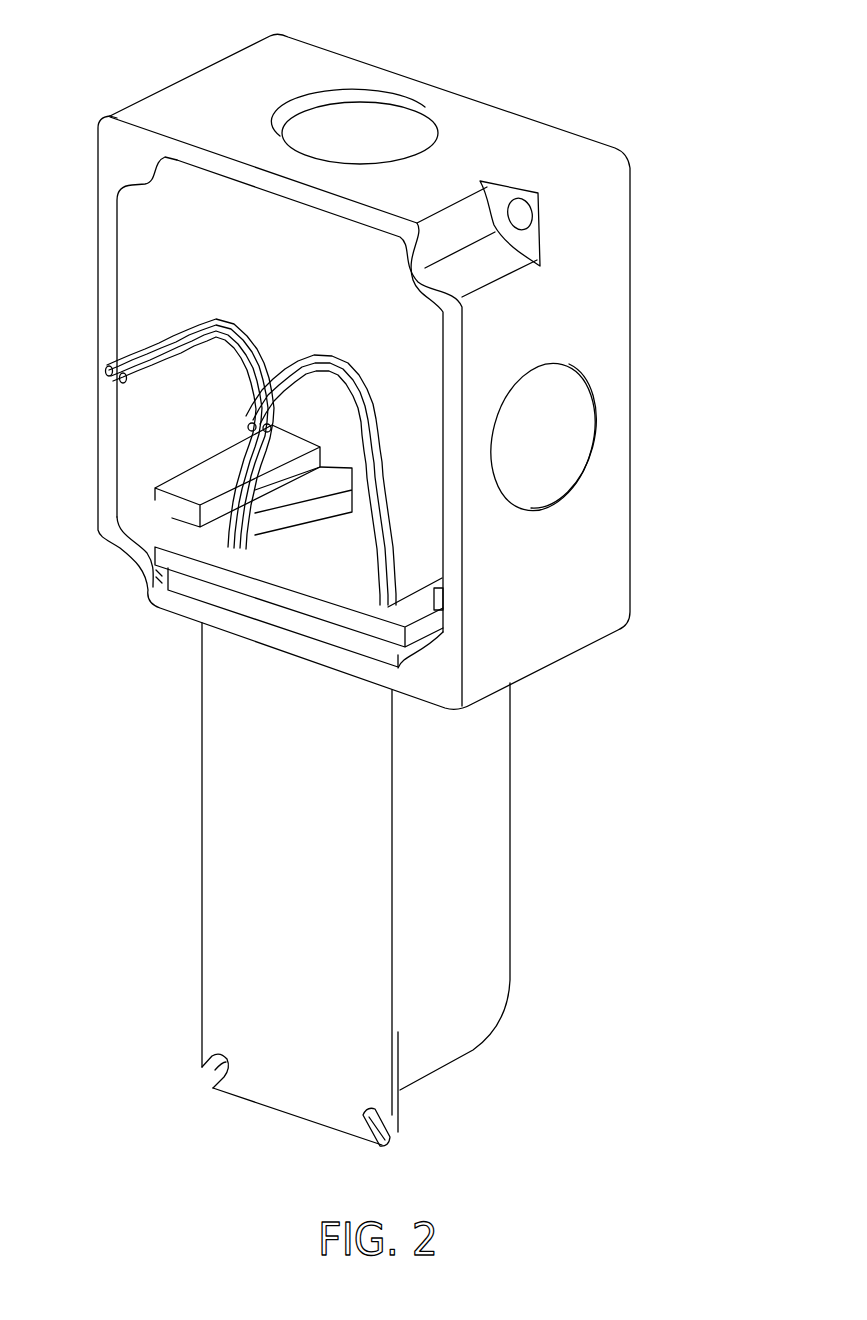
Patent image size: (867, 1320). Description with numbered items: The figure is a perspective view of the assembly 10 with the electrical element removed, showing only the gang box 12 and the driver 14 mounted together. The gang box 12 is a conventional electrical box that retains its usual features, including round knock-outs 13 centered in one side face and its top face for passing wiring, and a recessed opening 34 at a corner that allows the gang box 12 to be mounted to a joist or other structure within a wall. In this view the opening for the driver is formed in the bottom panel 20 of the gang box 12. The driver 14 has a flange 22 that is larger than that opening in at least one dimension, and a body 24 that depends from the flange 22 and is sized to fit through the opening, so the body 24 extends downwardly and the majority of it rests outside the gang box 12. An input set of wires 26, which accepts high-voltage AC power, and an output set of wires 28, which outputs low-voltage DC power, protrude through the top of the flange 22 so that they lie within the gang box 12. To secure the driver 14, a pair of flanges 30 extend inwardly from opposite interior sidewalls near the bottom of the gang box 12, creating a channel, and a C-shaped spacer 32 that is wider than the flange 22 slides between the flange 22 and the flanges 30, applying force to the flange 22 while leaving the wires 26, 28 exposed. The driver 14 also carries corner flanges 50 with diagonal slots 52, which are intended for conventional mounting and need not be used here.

The assembly 10 is at (570, 68).
The gang box 12 is at (496, 124).
The round knock-outs 13 is at (383, 122).
The driver 14 is at (496, 829).
The bottom panel 20 is at (158, 575).
The flange 22 is at (308, 632).
The body 24 is at (490, 880).
The input set of wires 26 is at (160, 350).
The output set of wires 28 is at (308, 358).
The pair of flanges 30 is at (190, 490).
The spacer 32 is at (222, 578).
The recessed openings 34 is at (521, 212).
The corner flanges 50 is at (205, 1053).
The diagonal slots 52 is at (215, 1072).